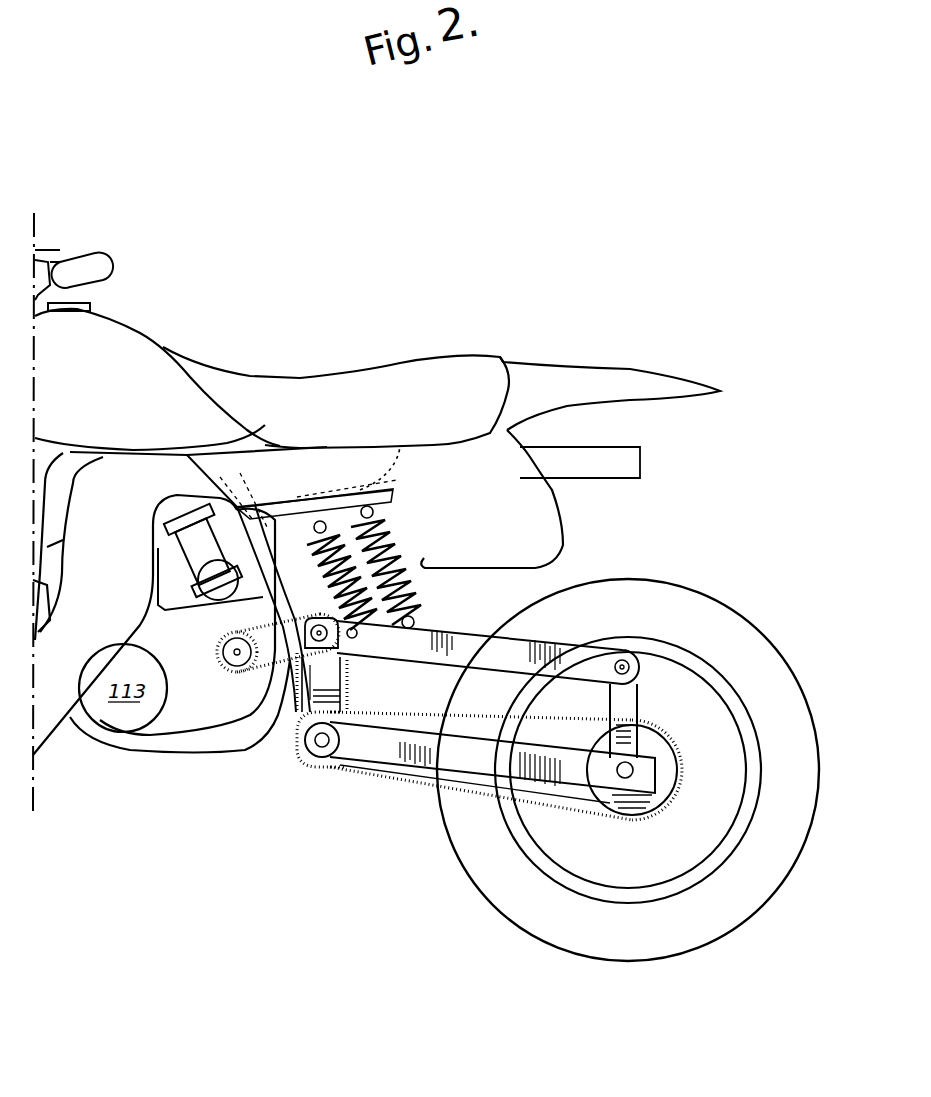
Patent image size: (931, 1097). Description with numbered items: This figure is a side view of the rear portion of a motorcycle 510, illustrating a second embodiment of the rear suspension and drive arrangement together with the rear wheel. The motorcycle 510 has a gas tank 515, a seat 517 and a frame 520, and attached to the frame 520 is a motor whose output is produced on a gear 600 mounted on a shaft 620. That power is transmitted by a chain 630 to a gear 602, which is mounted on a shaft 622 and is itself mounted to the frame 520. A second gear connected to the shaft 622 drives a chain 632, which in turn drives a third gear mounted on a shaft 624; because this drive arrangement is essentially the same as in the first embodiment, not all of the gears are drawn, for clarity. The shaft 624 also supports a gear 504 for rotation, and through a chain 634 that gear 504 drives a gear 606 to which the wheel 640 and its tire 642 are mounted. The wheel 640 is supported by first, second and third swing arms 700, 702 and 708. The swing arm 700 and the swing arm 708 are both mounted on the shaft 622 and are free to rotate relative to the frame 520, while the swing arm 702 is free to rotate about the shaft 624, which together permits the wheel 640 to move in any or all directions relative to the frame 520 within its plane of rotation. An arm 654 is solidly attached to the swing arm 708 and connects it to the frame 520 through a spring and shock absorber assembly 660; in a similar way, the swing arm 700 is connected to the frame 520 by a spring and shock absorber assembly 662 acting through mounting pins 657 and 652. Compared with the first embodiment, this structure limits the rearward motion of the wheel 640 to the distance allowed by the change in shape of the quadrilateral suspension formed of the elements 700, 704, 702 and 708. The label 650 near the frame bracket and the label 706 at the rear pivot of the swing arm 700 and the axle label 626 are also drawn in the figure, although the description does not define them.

The motorcycle 510 is at (222, 332).
The gas tank 515 is at (104, 333).
The seat 517 is at (365, 382).
The frame 520 is at (370, 495).
The frame bracket 650 is at (292, 490).
The mounting pin 652 is at (376, 508).
The spring and shock absorber assembly 662 is at (398, 545).
The spring and shock absorber assembly 660 is at (320, 563).
The gear 602 is at (312, 616).
The chain 630 is at (281, 637).
The gear 600 is at (236, 638).
The shaft 620 is at (237, 658).
The mounting pin 657 is at (420, 627).
The arm 654 is at (380, 642).
The third swing arm 708 is at (322, 680).
The first swing arm 700 is at (477, 650).
The tire 642 is at (687, 610).
The suspension element 704 is at (623, 707).
The upper arm rear pivot 706 is at (622, 660).
The wheel 640 is at (659, 719).
The gear 606 is at (650, 744).
The rear axle 626 is at (633, 775).
The second swing arm 702 is at (483, 757).
The gear 504 is at (307, 760).
The chain 634 is at (437, 787).
The shaft 624 is at (340, 757).
The shaft 622 is at (270, 737).
The chain 632 is at (290, 723).